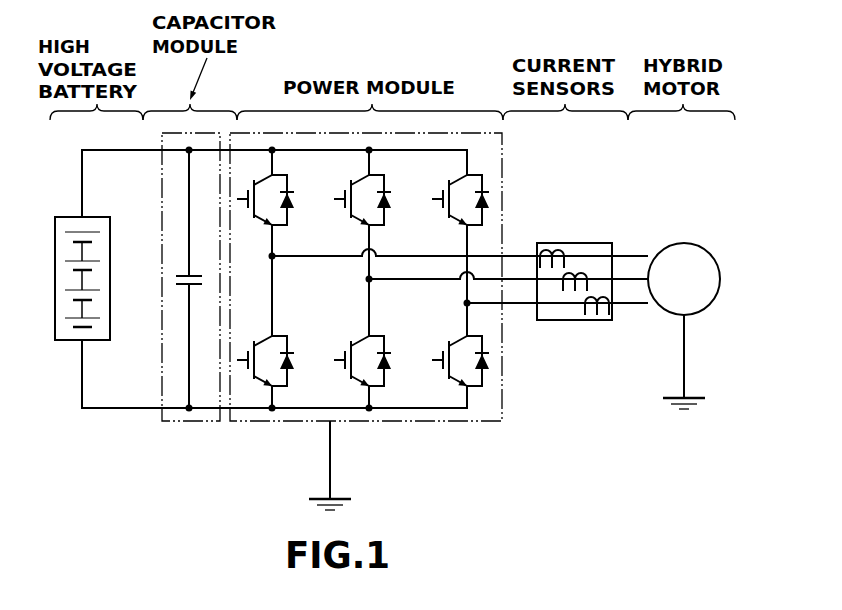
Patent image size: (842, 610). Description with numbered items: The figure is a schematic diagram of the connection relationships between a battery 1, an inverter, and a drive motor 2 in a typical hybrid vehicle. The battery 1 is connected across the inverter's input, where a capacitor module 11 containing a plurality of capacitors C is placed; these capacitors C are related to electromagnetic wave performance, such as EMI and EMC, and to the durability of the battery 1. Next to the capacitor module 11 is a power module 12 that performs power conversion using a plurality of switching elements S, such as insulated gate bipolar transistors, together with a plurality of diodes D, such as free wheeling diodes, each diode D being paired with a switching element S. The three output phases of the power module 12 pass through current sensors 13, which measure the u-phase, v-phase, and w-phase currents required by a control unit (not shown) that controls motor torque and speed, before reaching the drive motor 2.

The battery 1 is at (70, 216).
The capacitor module 11 is at (163, 320).
The power module 12 is at (487, 133).
The current sensors 13 is at (580, 243).
The drive motor 2 is at (683, 243).
The capacitors C is at (191, 279).
The switching elements S is at (243, 227).
The diodes D is at (299, 227).